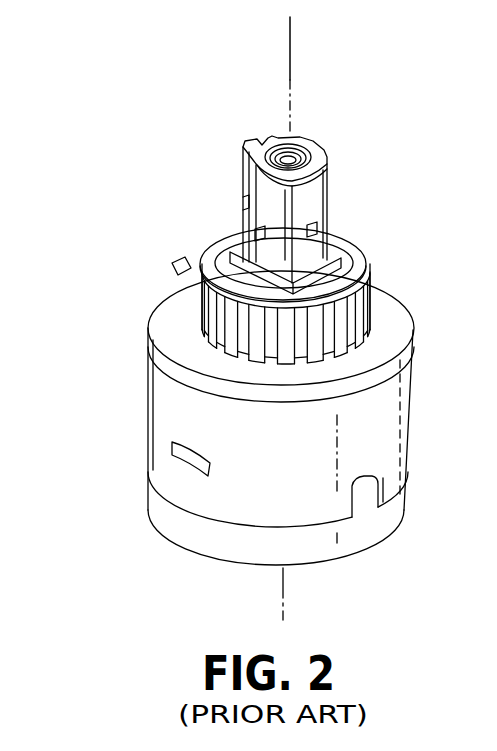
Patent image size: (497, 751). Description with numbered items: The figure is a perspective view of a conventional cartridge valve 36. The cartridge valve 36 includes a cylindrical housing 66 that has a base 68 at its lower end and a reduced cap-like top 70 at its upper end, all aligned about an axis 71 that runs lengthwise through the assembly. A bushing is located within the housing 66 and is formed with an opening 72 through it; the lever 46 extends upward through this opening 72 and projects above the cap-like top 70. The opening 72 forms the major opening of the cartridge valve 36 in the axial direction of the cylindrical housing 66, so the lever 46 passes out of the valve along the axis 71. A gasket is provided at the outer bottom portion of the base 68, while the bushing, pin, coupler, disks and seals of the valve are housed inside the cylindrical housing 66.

The cartridge valve 36 is at (122, 270).
The lever 46 is at (257, 148).
The cylindrical housing 66 is at (175, 400).
The base 68 is at (185, 517).
The reduced cap-like top 70 is at (370, 272).
The axis 71 is at (295, 60).
The opening 72 is at (332, 263).